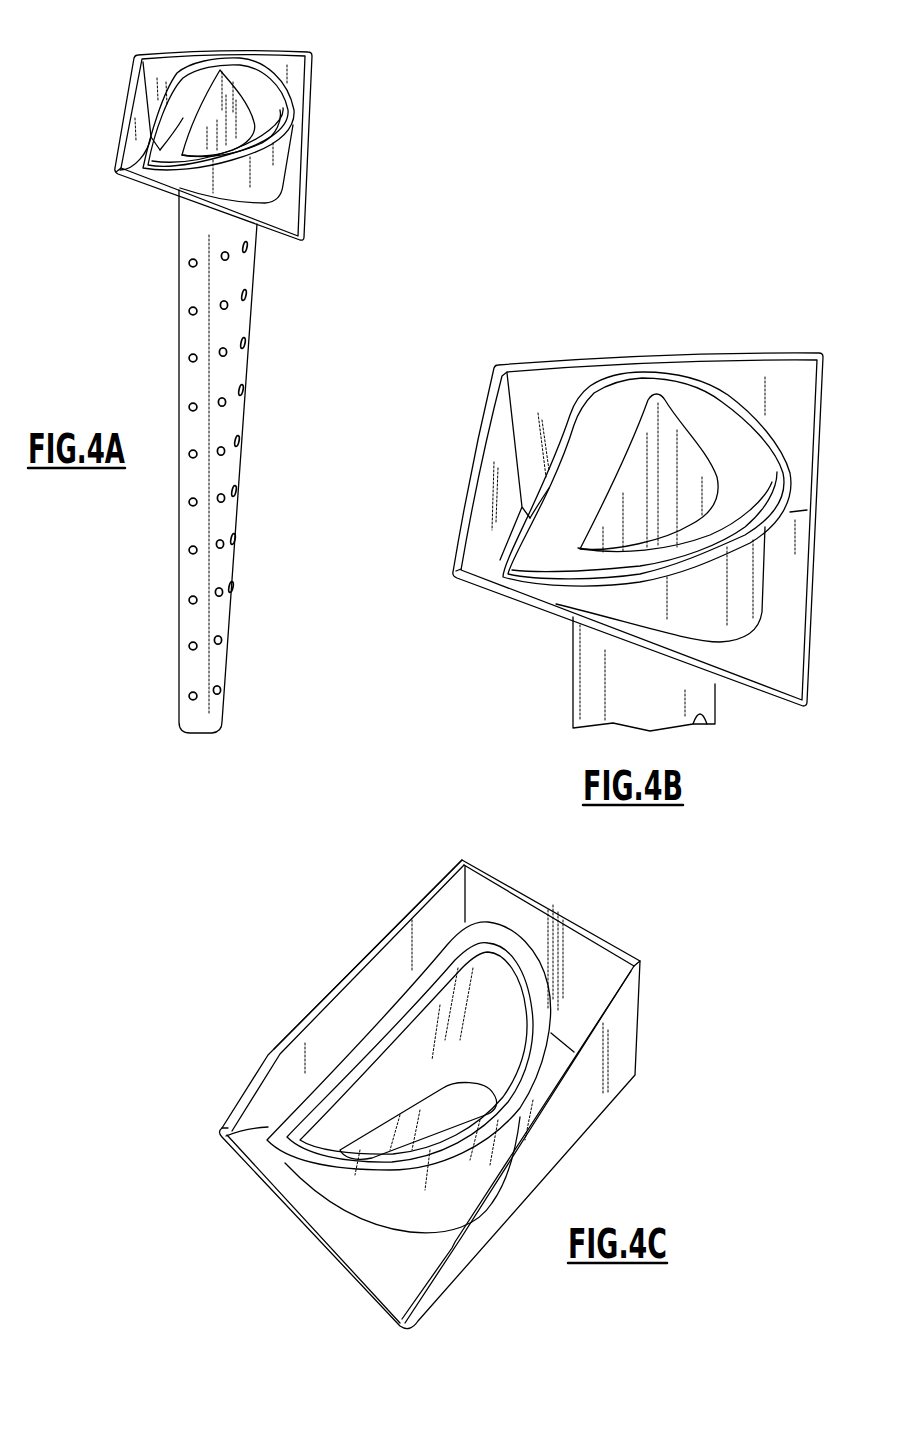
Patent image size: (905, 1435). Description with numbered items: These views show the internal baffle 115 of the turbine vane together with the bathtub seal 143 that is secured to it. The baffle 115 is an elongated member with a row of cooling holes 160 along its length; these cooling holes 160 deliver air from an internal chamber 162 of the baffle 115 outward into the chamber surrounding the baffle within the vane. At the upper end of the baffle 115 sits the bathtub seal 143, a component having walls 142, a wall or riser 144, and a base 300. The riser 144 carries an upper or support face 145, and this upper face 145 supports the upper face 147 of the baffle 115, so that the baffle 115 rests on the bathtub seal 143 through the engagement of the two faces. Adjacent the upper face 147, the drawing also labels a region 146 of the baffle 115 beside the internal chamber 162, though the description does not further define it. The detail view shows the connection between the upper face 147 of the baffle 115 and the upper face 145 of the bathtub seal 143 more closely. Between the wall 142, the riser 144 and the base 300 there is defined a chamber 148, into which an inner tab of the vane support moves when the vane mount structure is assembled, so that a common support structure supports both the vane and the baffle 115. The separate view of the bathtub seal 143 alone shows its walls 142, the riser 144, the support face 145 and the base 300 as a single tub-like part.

In FIG. 4A, the baffle 115 is at (187, 530).
In FIG. 4A, the wall 142 is at (118, 172).
In FIG. 4B, the wall 142 is at (457, 550).
In FIG. 4C, the wall 142 is at (262, 1102).
In FIG. 4A, the bathtub seal 143 is at (135, 113).
In FIG. 4B, the bathtub seal 143 is at (477, 433).
In FIG. 4C, the bathtub seal 143 is at (287, 967).
In FIG. 4A, the riser 144 is at (270, 167).
In FIG. 4B, the riser 144 is at (588, 598).
In FIG. 4C, the riser 144 is at (415, 1058).
In FIG. 4A, the upper face 145 is at (297, 107).
In FIG. 4B, the upper face 145 is at (493, 580).
In FIG. 4C, the upper face 145 is at (440, 957).
In FIG. 4A, the flange region 146 is at (235, 72).
In FIG. 4B, the flange region 146 is at (637, 383).
In FIG. 4A, the upper face 147 is at (270, 97).
In FIG. 4B, the upper face 147 is at (603, 393).
In FIG. 4B, the chamber 148 is at (540, 400).
In FIG. 4A, the cooling holes 160 is at (189, 310).
In FIG. 4A, the internal chamber 162 is at (240, 110).
In FIG. 4B, the internal chamber 162 is at (670, 460).
In FIG. 4A, the base 300 is at (285, 210).
In FIG. 4B, the base 300 is at (765, 657).
In FIG. 4C, the base 300 is at (402, 1266).